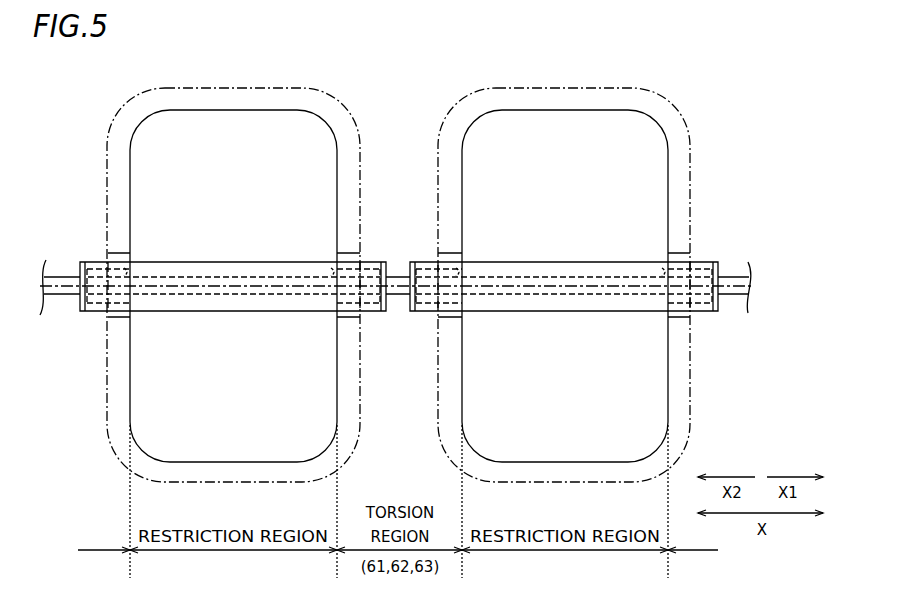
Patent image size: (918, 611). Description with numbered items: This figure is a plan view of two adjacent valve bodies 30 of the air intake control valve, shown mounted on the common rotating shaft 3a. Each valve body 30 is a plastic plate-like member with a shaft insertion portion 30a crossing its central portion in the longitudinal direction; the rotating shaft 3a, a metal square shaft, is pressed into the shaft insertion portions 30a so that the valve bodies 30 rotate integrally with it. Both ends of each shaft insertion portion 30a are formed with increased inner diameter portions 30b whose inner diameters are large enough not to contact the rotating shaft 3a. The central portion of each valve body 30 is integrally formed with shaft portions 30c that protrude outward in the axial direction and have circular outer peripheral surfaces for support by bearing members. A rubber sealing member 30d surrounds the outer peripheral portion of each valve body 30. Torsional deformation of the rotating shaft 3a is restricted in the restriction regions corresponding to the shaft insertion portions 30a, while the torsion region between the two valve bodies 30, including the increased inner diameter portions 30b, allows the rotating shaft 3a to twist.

The valve body 30 is at (204, 123).
The sealing member 30d is at (266, 88).
The shaft insertion portion 30a is at (207, 286).
The increased inner diameter portion 30b is at (128, 272).
The shaft portion 30c is at (92, 313).
The rotating shaft 3a is at (396, 277).